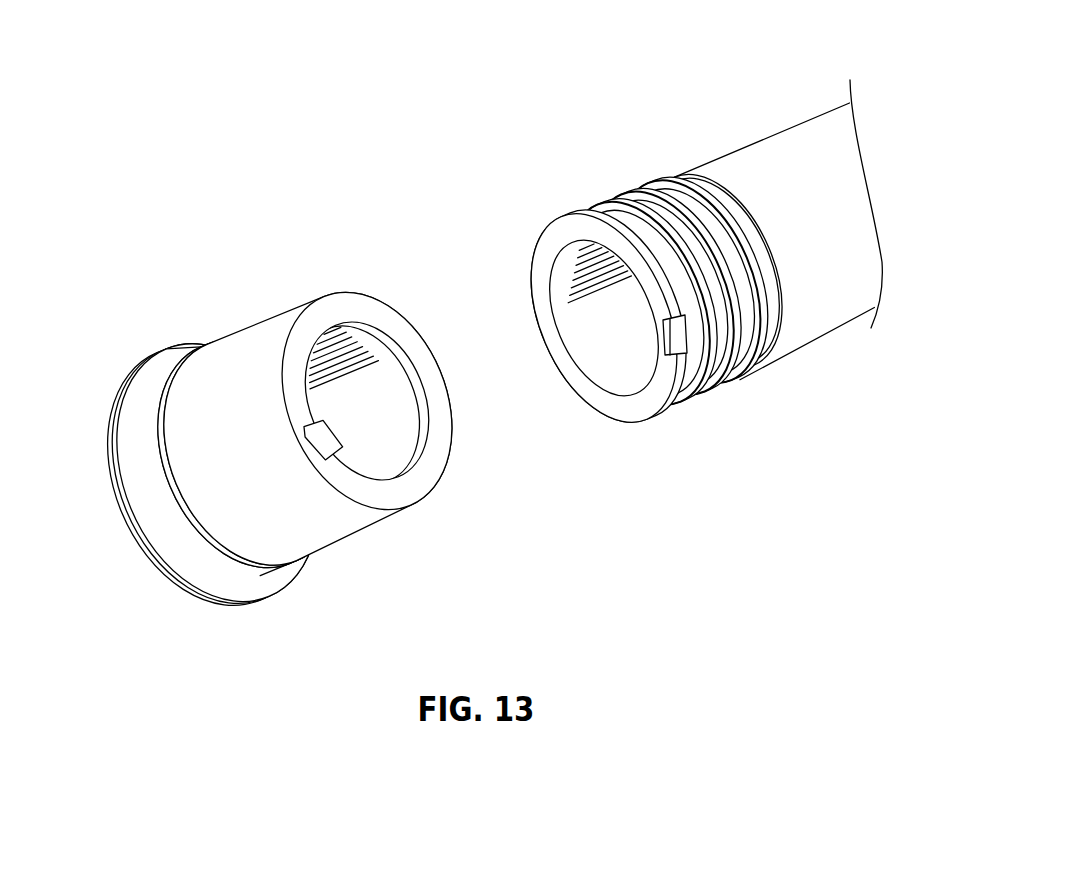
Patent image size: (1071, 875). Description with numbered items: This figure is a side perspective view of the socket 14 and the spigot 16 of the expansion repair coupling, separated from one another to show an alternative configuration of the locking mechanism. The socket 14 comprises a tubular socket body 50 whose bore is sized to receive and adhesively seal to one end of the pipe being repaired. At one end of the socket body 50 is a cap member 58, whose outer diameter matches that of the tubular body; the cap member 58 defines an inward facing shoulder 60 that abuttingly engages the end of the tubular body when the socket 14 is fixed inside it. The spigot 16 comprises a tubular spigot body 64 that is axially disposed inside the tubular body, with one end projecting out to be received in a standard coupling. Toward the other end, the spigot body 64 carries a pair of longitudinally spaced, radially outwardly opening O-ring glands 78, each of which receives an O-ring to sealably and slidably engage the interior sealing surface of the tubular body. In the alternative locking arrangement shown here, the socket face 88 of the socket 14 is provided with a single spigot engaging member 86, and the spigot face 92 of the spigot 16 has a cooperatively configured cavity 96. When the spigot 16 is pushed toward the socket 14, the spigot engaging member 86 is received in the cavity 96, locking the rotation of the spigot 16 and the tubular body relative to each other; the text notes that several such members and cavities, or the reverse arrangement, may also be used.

The socket 14 is at (277, 479).
The spigot 16 is at (737, 281).
The socket body 50 is at (320, 514).
The cap member 58 is at (120, 487).
The inward facing shoulder 60 is at (160, 514).
The spigot body 64 is at (826, 314).
The O-ring gland 78 is at (747, 327).
The spigot engaging member 86 is at (323, 443).
The socket face 88 is at (434, 450).
The spigot face 92 is at (553, 243).
The cavity 96 is at (682, 348).